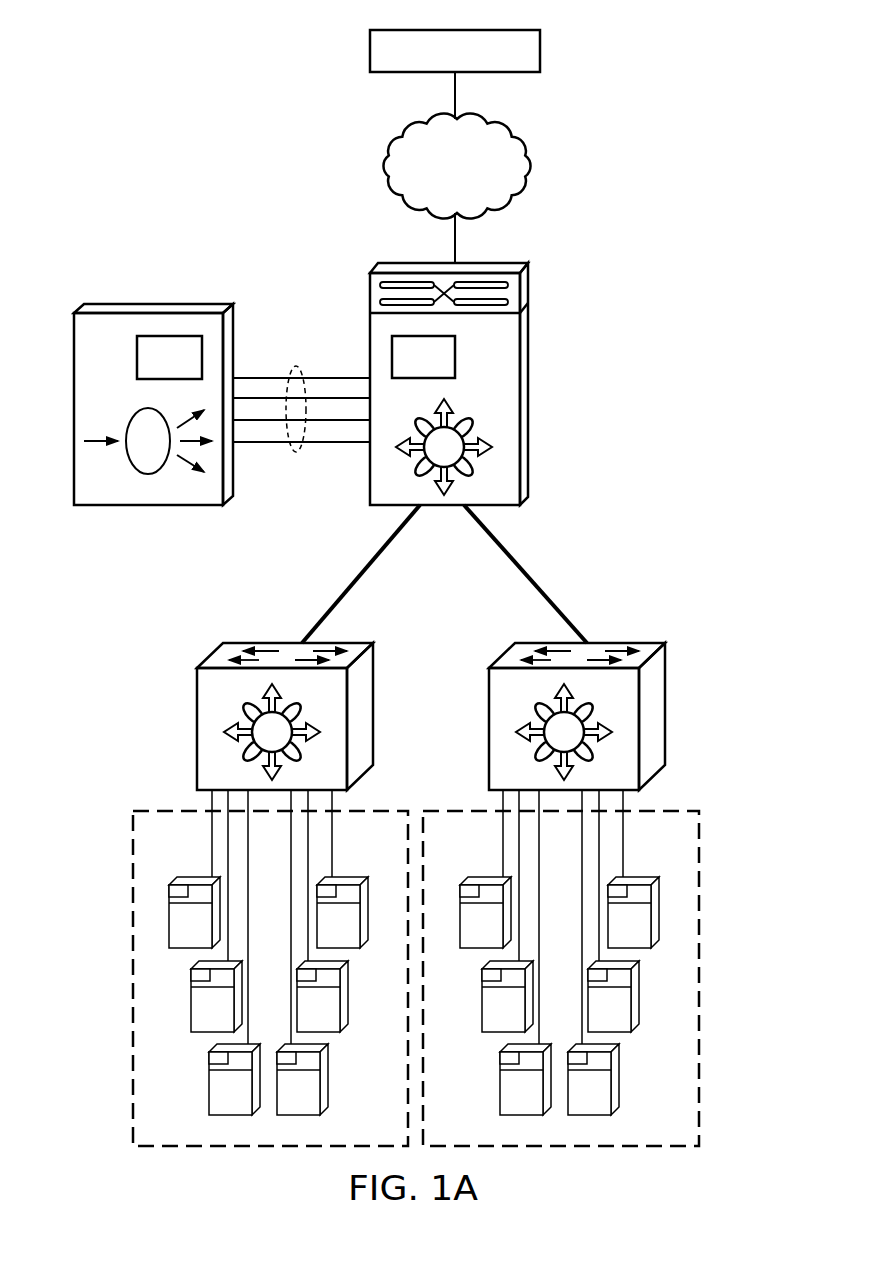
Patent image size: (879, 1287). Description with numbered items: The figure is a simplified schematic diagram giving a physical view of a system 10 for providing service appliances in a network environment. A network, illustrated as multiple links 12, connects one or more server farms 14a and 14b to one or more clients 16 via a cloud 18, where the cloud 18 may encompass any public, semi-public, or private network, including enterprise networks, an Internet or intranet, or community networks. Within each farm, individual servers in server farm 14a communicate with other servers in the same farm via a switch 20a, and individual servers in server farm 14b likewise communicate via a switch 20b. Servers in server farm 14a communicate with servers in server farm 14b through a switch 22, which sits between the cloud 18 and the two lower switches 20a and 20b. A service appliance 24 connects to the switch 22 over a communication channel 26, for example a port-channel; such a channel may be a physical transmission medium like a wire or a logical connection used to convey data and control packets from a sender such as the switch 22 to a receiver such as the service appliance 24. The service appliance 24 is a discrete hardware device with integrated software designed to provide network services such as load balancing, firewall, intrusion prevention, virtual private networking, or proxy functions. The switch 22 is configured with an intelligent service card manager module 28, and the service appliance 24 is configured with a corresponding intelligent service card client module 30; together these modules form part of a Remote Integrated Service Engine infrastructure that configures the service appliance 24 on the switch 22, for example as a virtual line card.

The system 10 is at (205, 188).
The network 12 is at (591, 580).
The server farm 14a is at (131, 1018).
The server farm 14b is at (701, 992).
The clients 16 is at (370, 58).
The cloud 18 is at (385, 170).
The switch 20a is at (205, 730).
The switch 20b is at (655, 705).
The switch 22 is at (485, 384).
The service appliance 24 is at (120, 404).
The communication channel 26 is at (296, 368).
The intelligent service card manager module 28 is at (455, 357).
The intelligent service card client module 30 is at (137, 352).